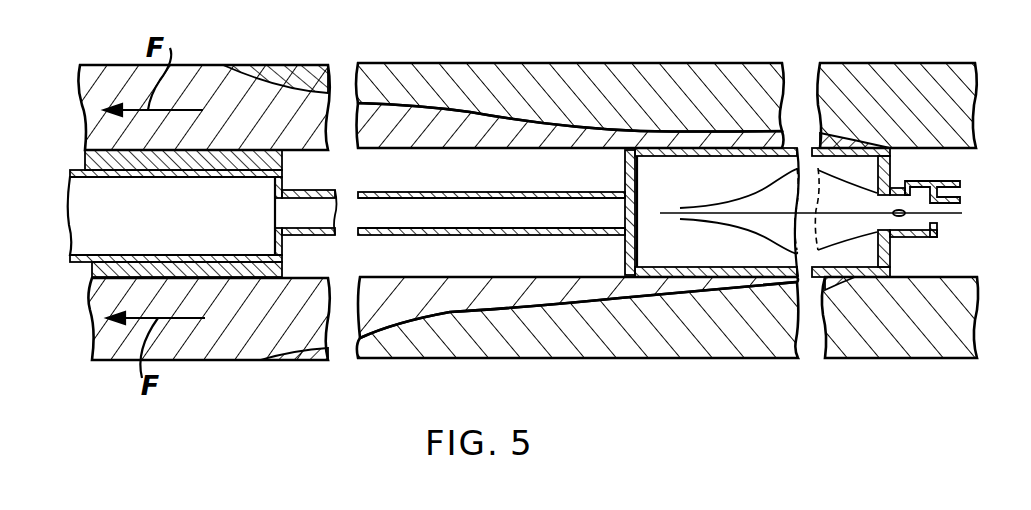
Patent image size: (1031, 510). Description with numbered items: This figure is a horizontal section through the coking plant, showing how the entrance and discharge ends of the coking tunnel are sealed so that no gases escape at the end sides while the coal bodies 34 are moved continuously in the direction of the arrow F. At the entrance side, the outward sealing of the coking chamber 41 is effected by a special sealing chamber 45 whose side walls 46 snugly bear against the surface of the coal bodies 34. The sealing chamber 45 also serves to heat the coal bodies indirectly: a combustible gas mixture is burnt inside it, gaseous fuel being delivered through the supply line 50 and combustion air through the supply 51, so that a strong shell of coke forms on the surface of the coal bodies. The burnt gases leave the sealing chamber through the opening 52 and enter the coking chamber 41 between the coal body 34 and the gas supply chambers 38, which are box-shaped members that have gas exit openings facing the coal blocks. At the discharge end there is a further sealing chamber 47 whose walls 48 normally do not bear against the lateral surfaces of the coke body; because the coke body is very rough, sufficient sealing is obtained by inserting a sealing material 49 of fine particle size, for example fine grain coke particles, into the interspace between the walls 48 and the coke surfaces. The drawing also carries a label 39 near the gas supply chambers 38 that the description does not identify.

The coal bodies 34 is at (318, 110).
The gas supply chambers 38 is at (510, 213).
The tube wall 39 is at (387, 193).
The coking chamber 41 is at (568, 167).
The sealing chamber 45 is at (678, 250).
The side walls 46 is at (720, 158).
The sealing chamber 47 is at (103, 217).
The walls 48 is at (175, 172).
The sealing material 49 is at (84, 160).
The supply line 50 is at (905, 208).
The supply of combustion air 51 is at (925, 218).
The opening 52 is at (633, 173).